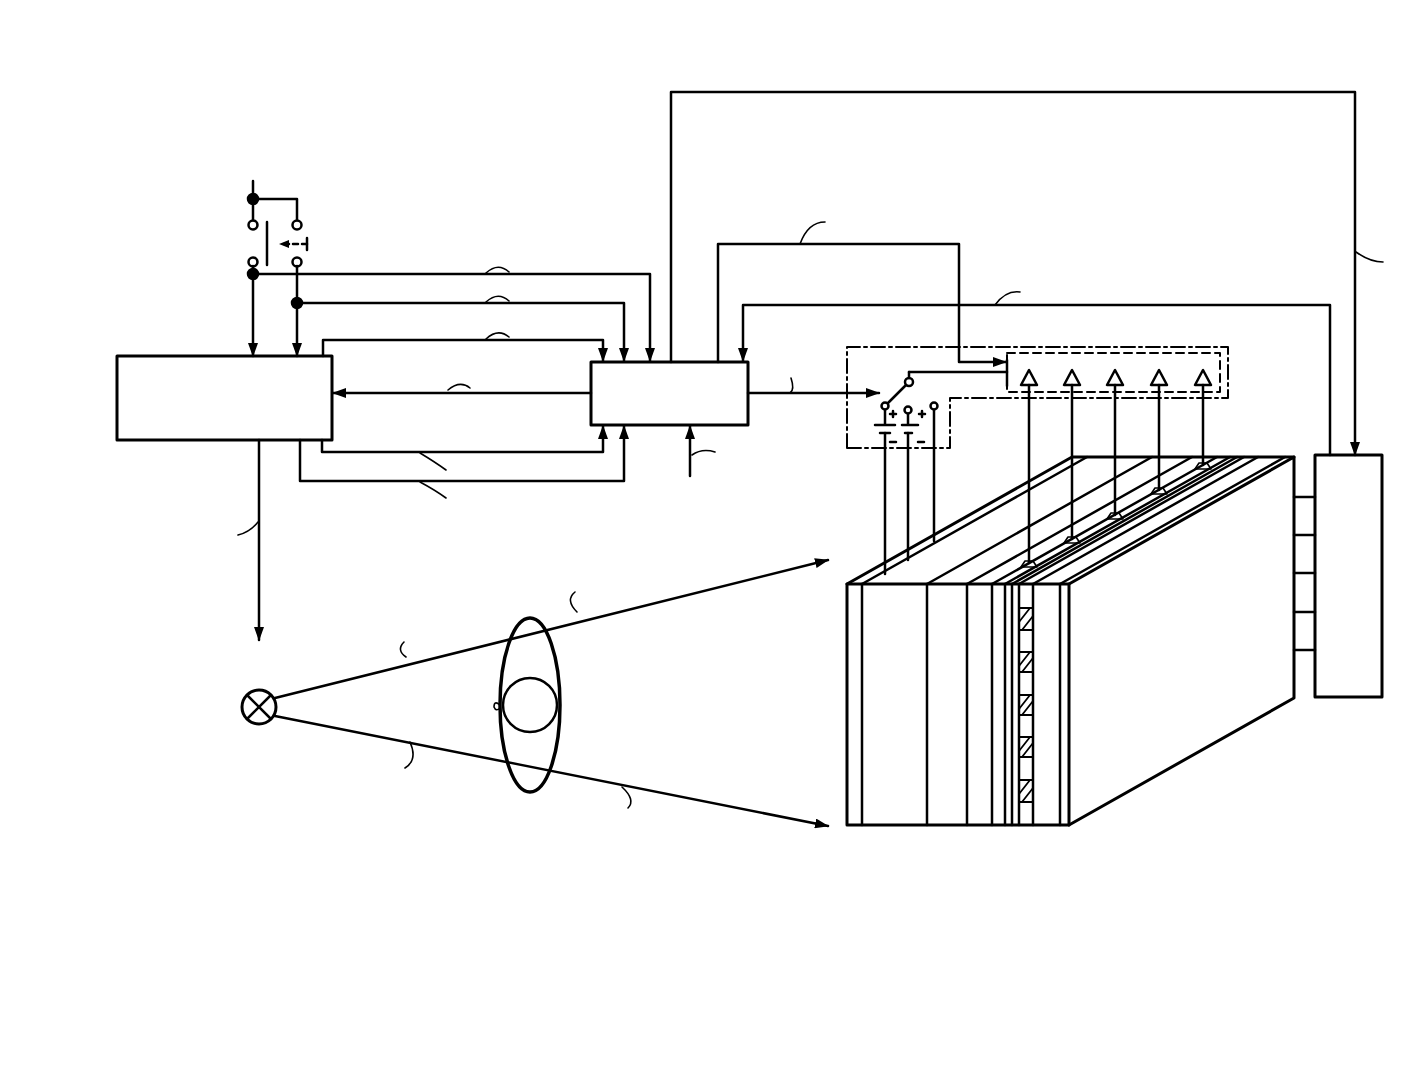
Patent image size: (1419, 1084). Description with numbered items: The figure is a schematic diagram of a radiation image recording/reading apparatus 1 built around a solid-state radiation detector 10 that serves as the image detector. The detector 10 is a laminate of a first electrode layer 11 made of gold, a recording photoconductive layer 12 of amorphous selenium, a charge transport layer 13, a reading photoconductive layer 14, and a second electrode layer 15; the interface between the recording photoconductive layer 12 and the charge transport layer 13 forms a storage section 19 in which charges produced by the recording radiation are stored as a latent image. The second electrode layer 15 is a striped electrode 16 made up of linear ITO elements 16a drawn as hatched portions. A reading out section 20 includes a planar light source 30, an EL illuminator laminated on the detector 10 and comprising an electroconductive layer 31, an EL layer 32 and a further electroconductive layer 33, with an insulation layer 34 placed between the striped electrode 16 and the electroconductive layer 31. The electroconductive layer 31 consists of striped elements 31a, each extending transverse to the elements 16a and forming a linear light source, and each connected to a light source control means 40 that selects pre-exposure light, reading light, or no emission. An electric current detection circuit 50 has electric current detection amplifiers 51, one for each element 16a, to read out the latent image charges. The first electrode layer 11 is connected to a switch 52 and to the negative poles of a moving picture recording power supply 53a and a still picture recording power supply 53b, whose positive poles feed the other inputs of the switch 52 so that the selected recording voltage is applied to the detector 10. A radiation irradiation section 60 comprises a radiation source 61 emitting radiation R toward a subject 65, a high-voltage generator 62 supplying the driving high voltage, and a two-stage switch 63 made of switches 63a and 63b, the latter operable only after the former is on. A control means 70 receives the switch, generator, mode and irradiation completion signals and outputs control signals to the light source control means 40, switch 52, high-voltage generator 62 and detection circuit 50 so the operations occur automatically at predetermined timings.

The radiation image recording/reading apparatus 1 is at (1380, 108).
The solid-state radiation detector 10 is at (828, 903).
The first electrode layer 11 is at (851, 827).
The recording photoconductive layer 12 is at (884, 827).
The charge transport layer 13 is at (940, 825).
The reading photoconductive layer 14 is at (977, 827).
The second electrode layer 15 is at (998, 827).
The striped electrode 16 is at (1226, 455).
The element 16a is at (1116, 515).
The storage section 19 is at (922, 782).
The reading out section 20 is at (1370, 361).
The planar light source 30 is at (1008, 903).
The electroconductive layer 31 is at (1033, 827).
The element 31a is at (1026, 827).
The EL layer 32 is at (1047, 827).
The electroconductive layer 33 is at (1065, 827).
The insulation layer 34 is at (1008, 827).
The light source control means 40 is at (1382, 470).
The electric current detection circuit 50 is at (1237, 345).
The electric current detection amplifier 51 is at (1218, 365).
The switch 52 is at (903, 378).
The moving picture recording power supply 53a is at (878, 432).
The still picture recording power supply 53b is at (903, 431).
The radiation irradiation section 60 is at (203, 336).
The radiation source 61 is at (258, 726).
The high-voltage generator 62 is at (228, 355).
The switch 63 is at (282, 157).
The switch 63a is at (304, 214).
The switch 63b is at (262, 214).
The subject 65 is at (525, 792).
The control means 70 is at (702, 362).